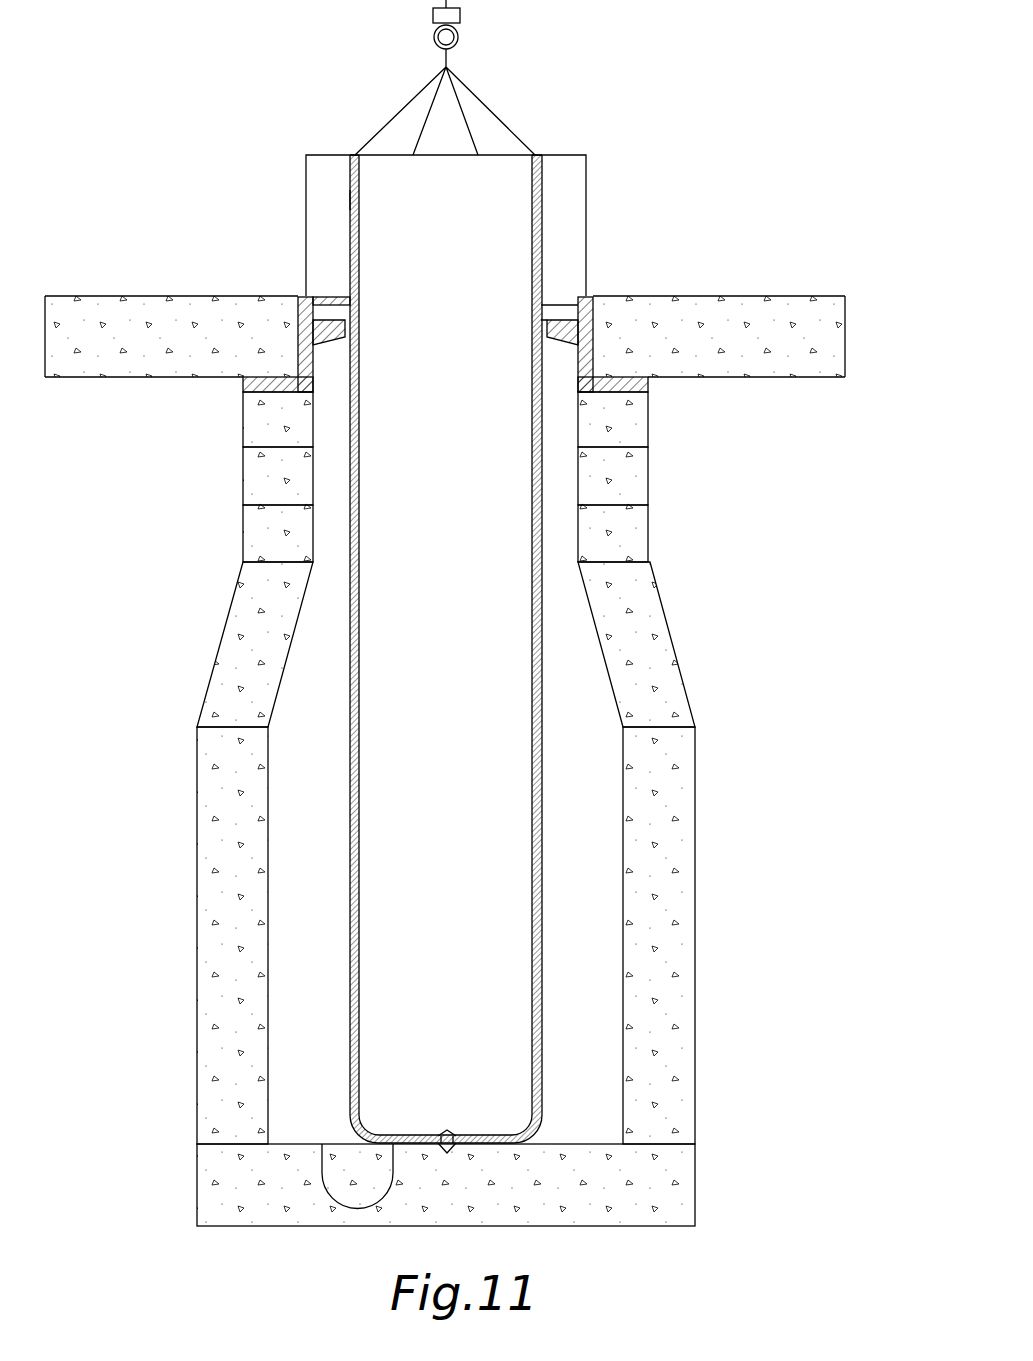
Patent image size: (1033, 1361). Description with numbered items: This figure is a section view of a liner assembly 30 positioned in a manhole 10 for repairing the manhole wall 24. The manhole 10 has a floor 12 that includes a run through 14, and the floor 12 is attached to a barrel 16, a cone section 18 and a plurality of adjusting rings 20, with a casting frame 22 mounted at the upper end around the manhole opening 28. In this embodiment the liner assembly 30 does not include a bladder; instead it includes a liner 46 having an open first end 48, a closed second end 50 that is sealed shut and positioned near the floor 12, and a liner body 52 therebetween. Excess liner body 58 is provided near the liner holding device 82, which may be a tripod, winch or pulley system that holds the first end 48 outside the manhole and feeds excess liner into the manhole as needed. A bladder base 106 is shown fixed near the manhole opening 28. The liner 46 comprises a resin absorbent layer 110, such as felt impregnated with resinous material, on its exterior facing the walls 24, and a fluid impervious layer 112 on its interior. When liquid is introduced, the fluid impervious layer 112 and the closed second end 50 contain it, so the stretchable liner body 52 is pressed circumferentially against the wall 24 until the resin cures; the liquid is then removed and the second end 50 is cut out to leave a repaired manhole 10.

The manhole 10 is at (464, 576).
The floor 12 is at (695, 1184).
The run through 14 is at (340, 1157).
The barrel 16 is at (696, 888).
The cone section 18 is at (657, 626).
The adjusting rings 20 is at (635, 438).
The casting frame 22 is at (587, 297).
The manhole wall 24 is at (269, 926).
The manhole opening 28 is at (332, 297).
The liner assembly 30 is at (515, 82).
The liner 46 is at (444, 649).
The first end 48 is at (356, 156).
The second end 50 is at (452, 1143).
The liner body 52 is at (480, 649).
The excess liner body 58 is at (350, 201).
The liner holding device 82 is at (432, 15).
The bladder base 106 is at (588, 181).
The resin absorbent layer 110 is at (480, 649).
The fluid impervious layer 112 is at (533, 885).